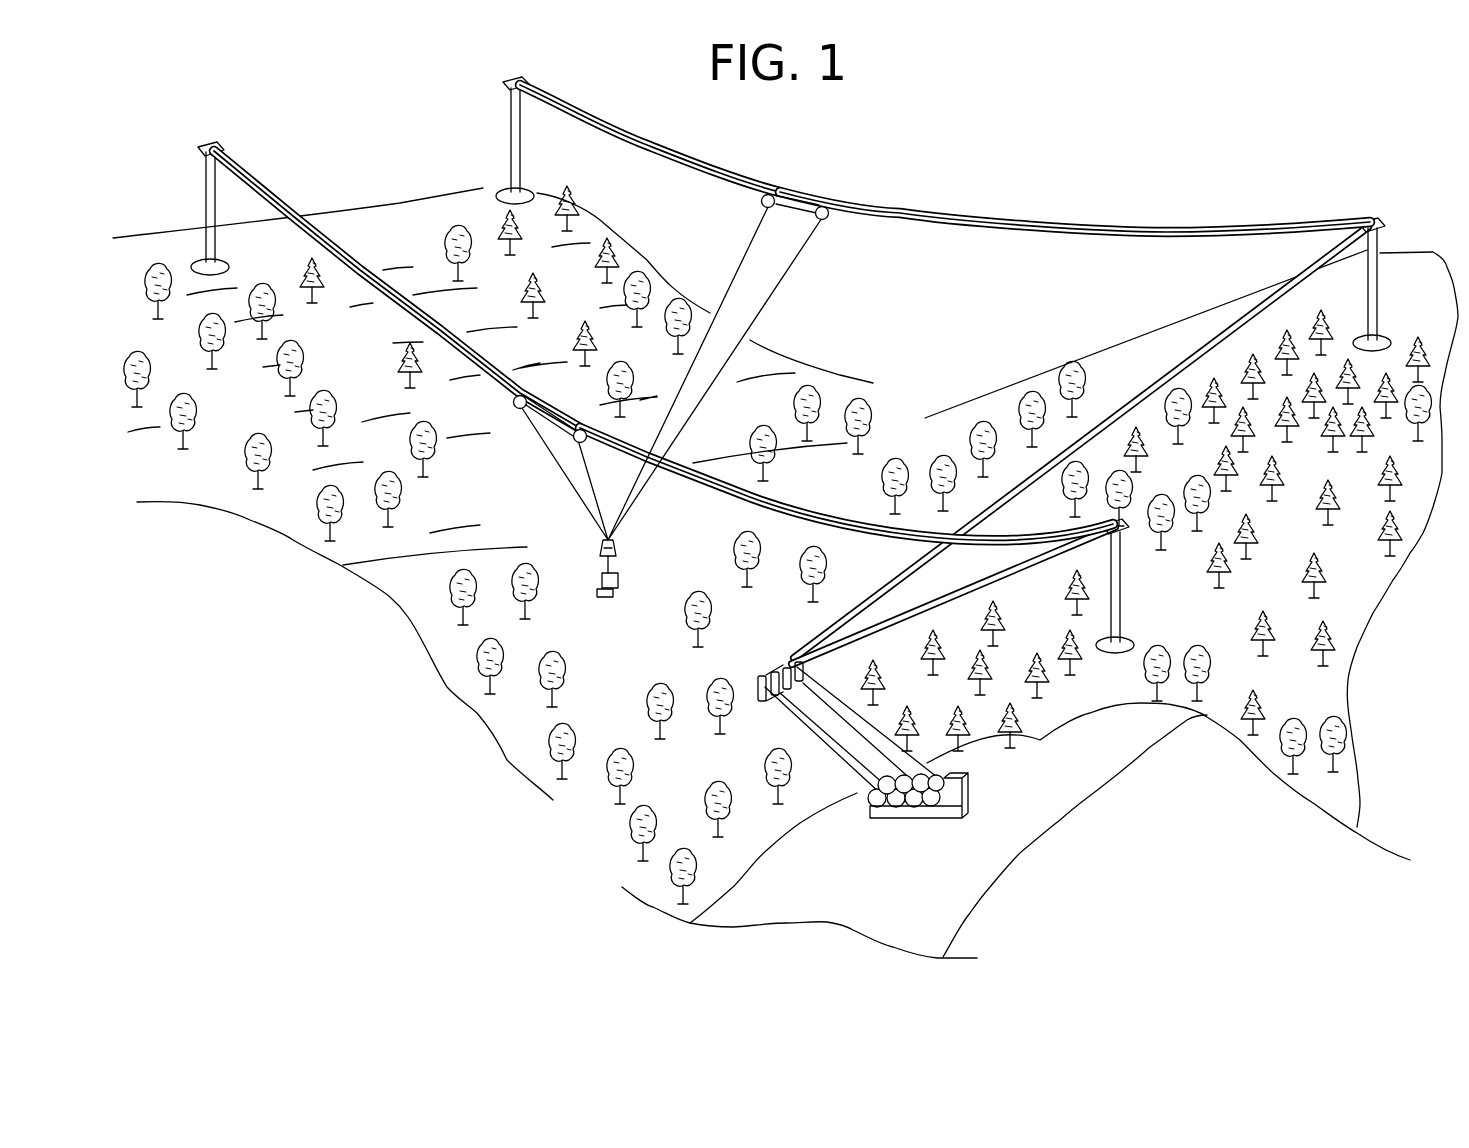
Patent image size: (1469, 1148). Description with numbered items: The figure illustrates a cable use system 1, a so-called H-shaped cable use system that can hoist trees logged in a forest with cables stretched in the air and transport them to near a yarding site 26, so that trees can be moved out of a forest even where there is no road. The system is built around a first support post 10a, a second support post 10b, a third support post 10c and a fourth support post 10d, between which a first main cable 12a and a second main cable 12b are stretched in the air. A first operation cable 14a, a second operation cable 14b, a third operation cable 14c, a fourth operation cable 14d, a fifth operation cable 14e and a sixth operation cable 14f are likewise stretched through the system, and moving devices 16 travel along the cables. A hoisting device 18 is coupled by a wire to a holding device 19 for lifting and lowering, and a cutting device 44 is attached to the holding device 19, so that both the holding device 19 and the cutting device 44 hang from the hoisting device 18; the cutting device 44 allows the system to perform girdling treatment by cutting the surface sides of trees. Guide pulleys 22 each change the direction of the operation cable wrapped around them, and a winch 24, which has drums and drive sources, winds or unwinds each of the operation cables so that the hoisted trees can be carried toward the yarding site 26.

The cable use system 1 is at (992, 168).
The first support post 10a is at (206, 210).
The second support post 10b is at (1120, 574).
The third support post 10c is at (510, 130).
The fourth support post 10d is at (1378, 290).
The first main cable 12a is at (440, 318).
The second main cable 12b is at (800, 196).
The first operation cable 14a is at (388, 308).
The second operation cable 14b is at (722, 500).
The third operation cable 14c is at (665, 166).
The fourth operation cable 14d is at (914, 222).
The fifth operation cable 14e is at (556, 478).
The sixth operation cable 14f is at (774, 300).
The moving device 16 is at (540, 415).
The hoisting device 18 is at (596, 552).
The holding device 19 is at (622, 580).
The guide pulleys 22 is at (770, 668).
The winch 24 is at (908, 820).
The yarding site 26 is at (1100, 772).
The cutting device 44 is at (604, 600).